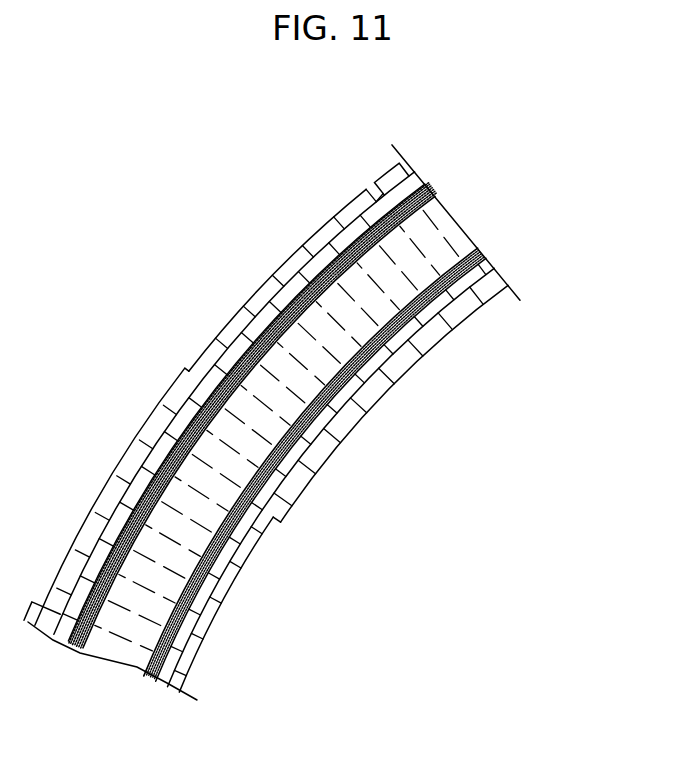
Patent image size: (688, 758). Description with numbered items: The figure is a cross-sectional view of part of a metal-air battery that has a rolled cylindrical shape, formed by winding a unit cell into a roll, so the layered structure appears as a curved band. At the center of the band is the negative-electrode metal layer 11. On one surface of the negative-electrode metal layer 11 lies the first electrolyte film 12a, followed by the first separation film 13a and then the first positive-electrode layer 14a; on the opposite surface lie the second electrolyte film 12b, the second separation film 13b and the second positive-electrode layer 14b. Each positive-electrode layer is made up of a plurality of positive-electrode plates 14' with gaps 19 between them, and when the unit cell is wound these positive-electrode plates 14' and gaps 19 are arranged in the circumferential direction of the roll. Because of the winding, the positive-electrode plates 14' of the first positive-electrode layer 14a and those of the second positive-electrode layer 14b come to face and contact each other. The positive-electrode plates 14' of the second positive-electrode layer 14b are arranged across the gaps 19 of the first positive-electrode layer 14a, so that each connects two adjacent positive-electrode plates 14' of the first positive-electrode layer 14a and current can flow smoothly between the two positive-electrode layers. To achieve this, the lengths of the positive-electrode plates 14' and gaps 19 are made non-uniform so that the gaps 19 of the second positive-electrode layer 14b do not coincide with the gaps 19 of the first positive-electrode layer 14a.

The negative-electrode metal layer 11 is at (460, 233).
The first electrolyte film 12a is at (437, 199).
The second electrolyte film 12b is at (478, 247).
The first separation film 13a is at (428, 191).
The second separation film 13b is at (485, 254).
The first positive-electrode layer 14a is at (429, 178).
The second positive-electrode layer 14b is at (410, 167).
The positive-electrode plates 14' is at (158, 495).
The gaps 19 is at (366, 178).